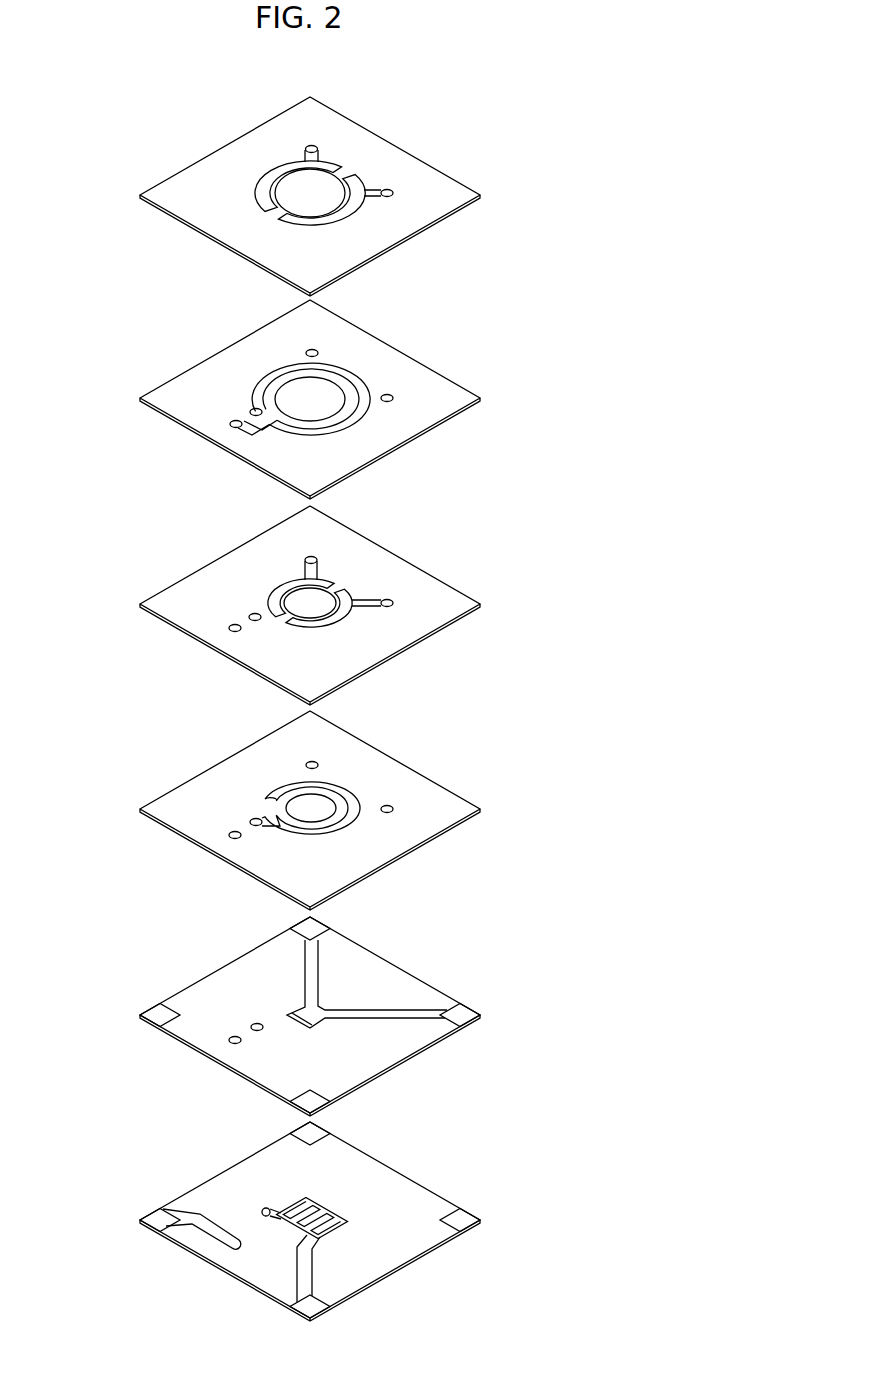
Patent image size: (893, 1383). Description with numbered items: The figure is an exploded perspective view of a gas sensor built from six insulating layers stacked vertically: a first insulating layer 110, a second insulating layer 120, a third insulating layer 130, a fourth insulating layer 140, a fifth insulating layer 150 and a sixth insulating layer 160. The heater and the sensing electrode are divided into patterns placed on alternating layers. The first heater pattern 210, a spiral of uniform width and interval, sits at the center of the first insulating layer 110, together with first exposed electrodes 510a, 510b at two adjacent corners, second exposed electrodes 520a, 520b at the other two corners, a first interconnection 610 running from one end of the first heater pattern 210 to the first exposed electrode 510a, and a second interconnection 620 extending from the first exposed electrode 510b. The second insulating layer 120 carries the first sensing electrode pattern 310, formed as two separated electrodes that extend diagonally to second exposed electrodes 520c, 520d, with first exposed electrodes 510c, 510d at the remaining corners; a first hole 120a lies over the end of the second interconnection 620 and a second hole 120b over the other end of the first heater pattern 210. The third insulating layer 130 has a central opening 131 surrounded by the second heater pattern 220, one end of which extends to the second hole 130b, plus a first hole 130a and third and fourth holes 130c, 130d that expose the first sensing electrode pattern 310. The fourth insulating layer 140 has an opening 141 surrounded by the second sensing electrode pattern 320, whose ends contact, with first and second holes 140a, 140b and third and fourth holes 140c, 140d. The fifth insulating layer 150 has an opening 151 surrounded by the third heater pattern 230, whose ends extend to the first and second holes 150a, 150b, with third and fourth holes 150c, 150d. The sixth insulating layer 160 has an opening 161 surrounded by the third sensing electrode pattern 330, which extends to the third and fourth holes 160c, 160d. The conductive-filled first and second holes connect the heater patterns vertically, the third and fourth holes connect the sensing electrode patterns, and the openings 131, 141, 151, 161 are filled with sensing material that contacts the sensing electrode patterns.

The first insulating layer 110 is at (425, 1257).
The second insulating layer 120 is at (427, 1048).
The third insulating layer 130 is at (481, 808).
The fourth insulating layer 140 is at (481, 603).
The fifth insulating layer 150 is at (481, 398).
The sixth insulating layer 160 is at (481, 194).
The opening 131 is at (308, 802).
The opening 141 is at (300, 600).
The opening 151 is at (298, 395).
The opening 161 is at (285, 190).
The first heater pattern 210 is at (330, 1207).
The second heater pattern 220 is at (345, 795).
The third heater pattern 230 is at (353, 380).
The first sensing electrode pattern 310 is at (383, 1013).
The second sensing electrode pattern 320 is at (342, 595).
The third sensing electrode pattern 330 is at (353, 178).
The first hole 120a is at (235, 1036).
The second hole 120b is at (257, 1023).
The first hole 130a is at (235, 831).
The second hole 130b is at (255, 818).
The third hole 130c is at (388, 806).
The fourth hole 130d is at (313, 762).
The first hole 140a is at (235, 624).
The second hole 140b is at (255, 613).
The third hole 140c is at (388, 602).
The fourth hole 140d is at (313, 557).
The first hole 150a is at (236, 419).
The second hole 150b is at (252, 407).
The third hole 150c is at (389, 395).
The fourth hole 150d is at (313, 350).
The third hole 160c is at (390, 192).
The fourth hole 160d is at (314, 147).
The first exposed electrode 510a is at (307, 1303).
The first exposed electrode 510b is at (158, 1220).
The first exposed electrode 510c is at (300, 1093).
The first exposed electrode 510d is at (157, 1012).
The second exposed electrode 520a is at (455, 1217).
The second exposed electrode 520b is at (313, 1130).
The second exposed electrode 520c is at (455, 1010).
The second exposed electrode 520d is at (314, 928).
The first interconnection 610 is at (307, 1267).
The second interconnection 620 is at (217, 1227).